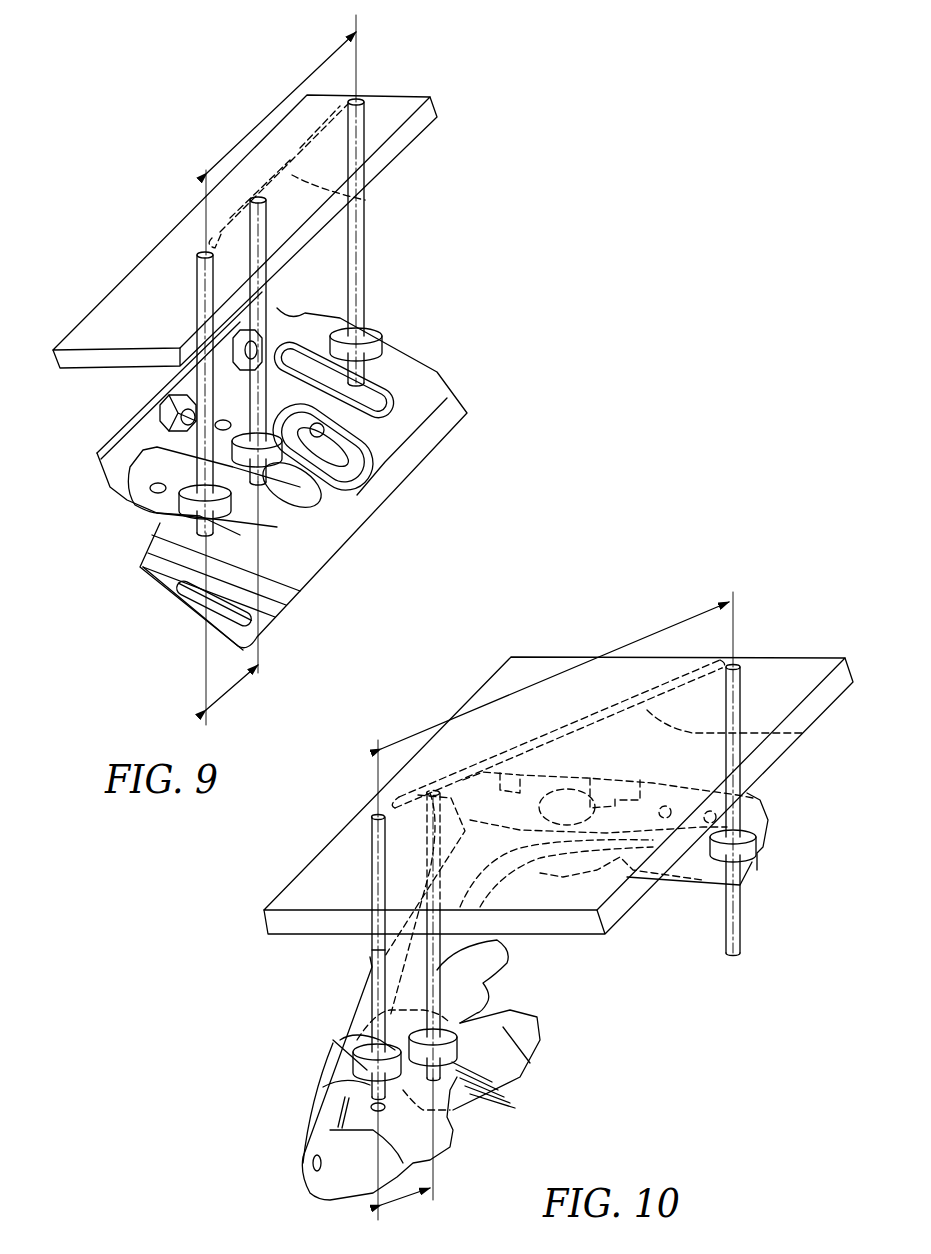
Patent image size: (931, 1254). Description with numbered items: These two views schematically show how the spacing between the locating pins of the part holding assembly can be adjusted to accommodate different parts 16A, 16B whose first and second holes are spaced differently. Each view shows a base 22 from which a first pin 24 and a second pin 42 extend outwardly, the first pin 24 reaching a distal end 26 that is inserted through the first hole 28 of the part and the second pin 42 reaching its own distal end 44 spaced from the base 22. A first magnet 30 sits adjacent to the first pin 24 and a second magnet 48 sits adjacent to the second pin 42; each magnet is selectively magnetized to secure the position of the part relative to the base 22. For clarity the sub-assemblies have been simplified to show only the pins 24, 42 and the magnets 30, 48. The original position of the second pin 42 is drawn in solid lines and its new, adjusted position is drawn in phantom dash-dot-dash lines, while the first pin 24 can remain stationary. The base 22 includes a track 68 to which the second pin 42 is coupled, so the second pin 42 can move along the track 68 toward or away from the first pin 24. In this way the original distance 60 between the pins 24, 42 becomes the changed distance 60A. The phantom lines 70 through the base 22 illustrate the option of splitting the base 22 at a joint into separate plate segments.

In FIG. 9, the part 16A is at (455, 405).
In FIG. 10, the part 16B is at (310, 1165).
In FIG. 9, the base 22 is at (405, 108).
In FIG. 10, the base 22 is at (773, 680).
In FIG. 9, the first pin 24 is at (180, 378).
In FIG. 10, the first pin 24 is at (372, 950).
In FIG. 9, the distal end 26 is at (153, 553).
In FIG. 10, the distal end 26 is at (365, 1085).
In FIG. 10, the first hole 28 is at (370, 1105).
In FIG. 9, the first magnet 30 is at (157, 510).
In FIG. 10, the first magnet 30 is at (345, 1050).
In FIG. 9, the second pin 42 is at (365, 235).
In FIG. 10, the second pin 42 is at (742, 748).
In FIG. 9, the distal end 44 is at (380, 368).
In FIG. 10, the distal end 44 is at (742, 937).
In FIG. 9, the second magnet 48 is at (385, 333).
In FIG. 10, the second magnet 48 is at (760, 847).
In FIG. 9, the distance 60 is at (232, 690).
In FIG. 10, the distance 60 is at (405, 1195).
In FIG. 9, the changed distance 60A is at (273, 108).
In FIG. 10, the changed distance 60A is at (656, 633).
In FIG. 9, the track 68 is at (366, 200).
In FIG. 10, the track 68 is at (800, 735).
In FIG. 9, the phantom lines 70 is at (195, 225).